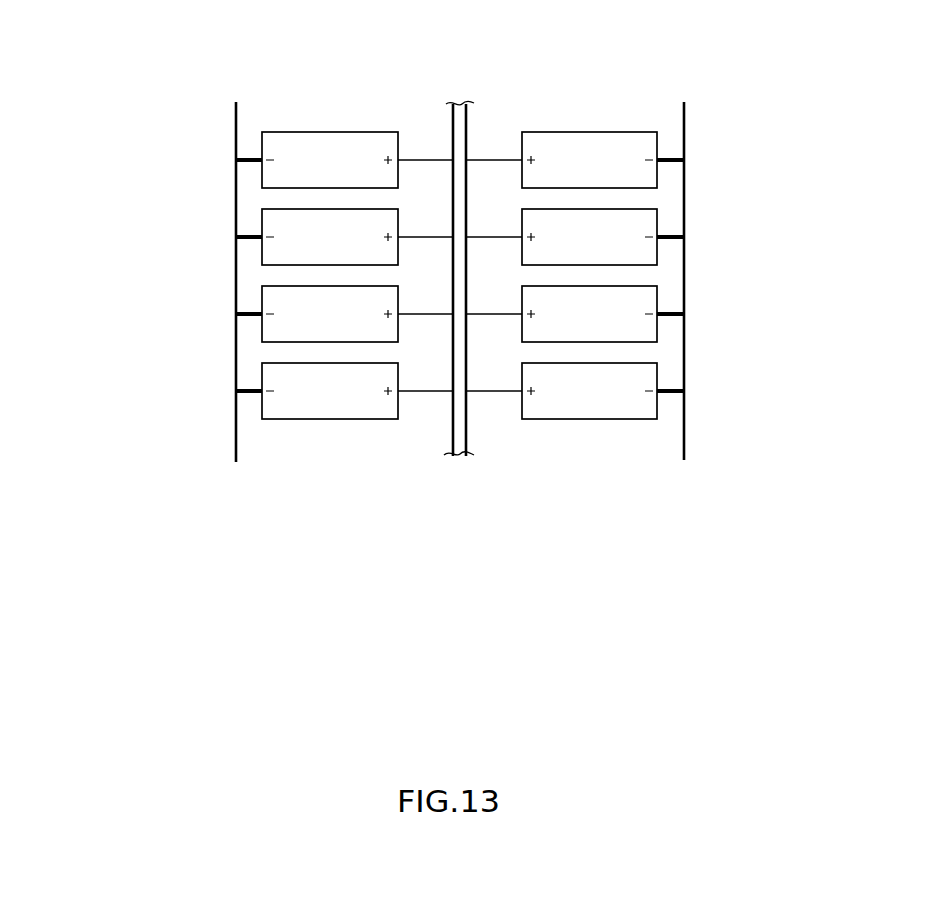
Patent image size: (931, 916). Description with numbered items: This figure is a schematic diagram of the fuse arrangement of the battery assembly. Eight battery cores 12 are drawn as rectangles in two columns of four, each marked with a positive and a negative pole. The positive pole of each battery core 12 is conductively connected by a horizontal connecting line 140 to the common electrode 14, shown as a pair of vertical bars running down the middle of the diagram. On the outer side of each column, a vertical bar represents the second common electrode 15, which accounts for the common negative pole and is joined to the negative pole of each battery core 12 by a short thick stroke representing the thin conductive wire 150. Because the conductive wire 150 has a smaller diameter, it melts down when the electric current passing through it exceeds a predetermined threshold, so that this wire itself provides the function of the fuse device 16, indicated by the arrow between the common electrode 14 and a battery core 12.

The battery core 12 is at (330, 132).
The common electrode 14 is at (457, 102).
The second common electrode 15 is at (683, 268).
The thin conductive wire 150 is at (253, 162).
The connecting line 140 is at (487, 391).
The fuse device 16 is at (512, 450).